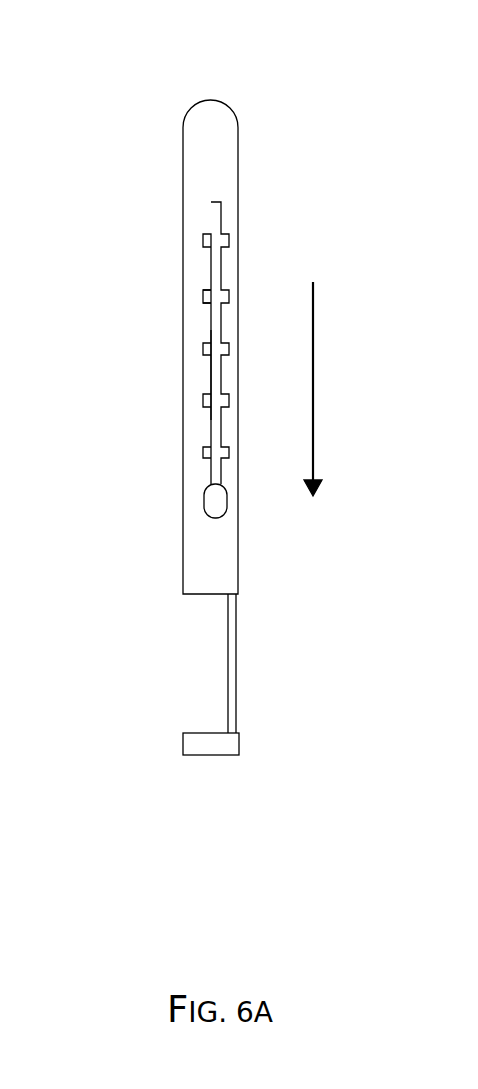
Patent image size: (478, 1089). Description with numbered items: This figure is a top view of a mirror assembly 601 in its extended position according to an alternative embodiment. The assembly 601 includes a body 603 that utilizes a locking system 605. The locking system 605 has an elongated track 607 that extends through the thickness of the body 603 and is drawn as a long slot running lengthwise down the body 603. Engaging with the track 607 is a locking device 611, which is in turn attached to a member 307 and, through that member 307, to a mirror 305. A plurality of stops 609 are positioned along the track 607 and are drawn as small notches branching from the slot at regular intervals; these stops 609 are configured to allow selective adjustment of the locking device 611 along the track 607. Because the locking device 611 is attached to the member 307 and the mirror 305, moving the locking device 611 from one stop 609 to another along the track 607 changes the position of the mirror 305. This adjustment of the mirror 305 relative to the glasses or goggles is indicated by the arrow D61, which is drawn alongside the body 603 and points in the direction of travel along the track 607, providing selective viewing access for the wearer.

The assembly 601 is at (342, 74).
The body 603 is at (183, 146).
The locking system 605 is at (245, 271).
The elongated track 607 is at (210, 377).
The notch 609 is at (205, 297).
The locking device 611 is at (205, 503).
The member 307 is at (236, 661).
The mirror 305 is at (212, 755).
The arrow D61 is at (314, 353).